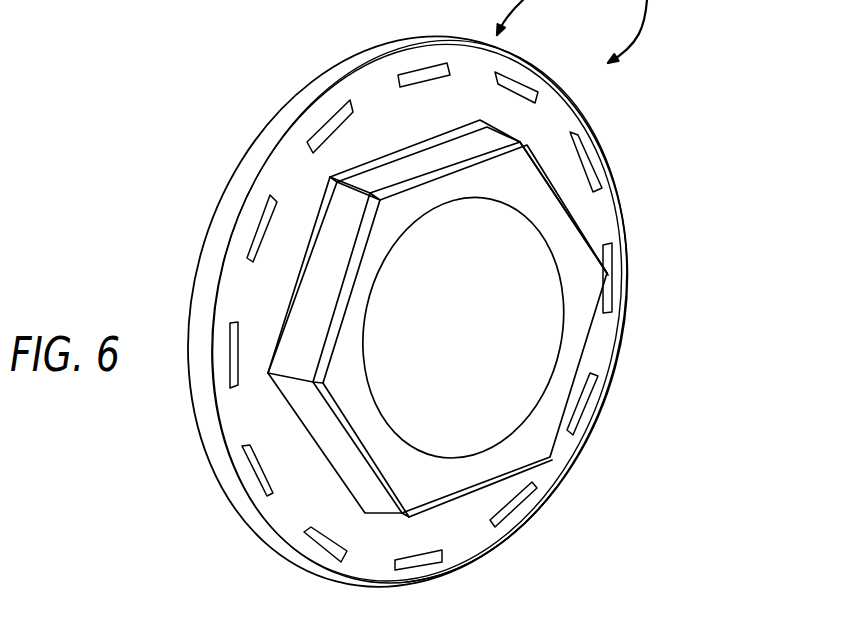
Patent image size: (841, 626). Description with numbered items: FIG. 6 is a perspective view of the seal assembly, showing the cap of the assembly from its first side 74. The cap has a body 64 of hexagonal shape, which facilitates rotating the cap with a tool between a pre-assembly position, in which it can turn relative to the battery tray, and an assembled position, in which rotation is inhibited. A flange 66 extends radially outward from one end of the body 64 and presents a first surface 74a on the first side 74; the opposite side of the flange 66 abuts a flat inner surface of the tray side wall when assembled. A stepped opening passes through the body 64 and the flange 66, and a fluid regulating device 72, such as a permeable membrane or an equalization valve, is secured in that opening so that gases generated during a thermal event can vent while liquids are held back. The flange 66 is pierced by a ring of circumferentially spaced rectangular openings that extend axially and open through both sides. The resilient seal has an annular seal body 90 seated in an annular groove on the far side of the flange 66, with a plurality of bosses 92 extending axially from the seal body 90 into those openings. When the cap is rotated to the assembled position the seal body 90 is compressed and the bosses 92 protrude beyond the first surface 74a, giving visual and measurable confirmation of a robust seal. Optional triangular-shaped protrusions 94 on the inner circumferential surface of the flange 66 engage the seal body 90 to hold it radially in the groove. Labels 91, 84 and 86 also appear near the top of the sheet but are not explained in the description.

The body 64 is at (320, 305).
The flange 66 is at (242, 510).
The fluid regulating device 72 is at (470, 277).
The first side 74 is at (310, 177).
The first surface 74a is at (467, 543).
The bosses 92 is at (233, 340).
The triangular-shaped protrusions 94 is at (53, 9).
The element 91 is at (107, 0).
The element 84 is at (133, 0).
The seal body 90 is at (217, 0).
The element 86 is at (330, 12).